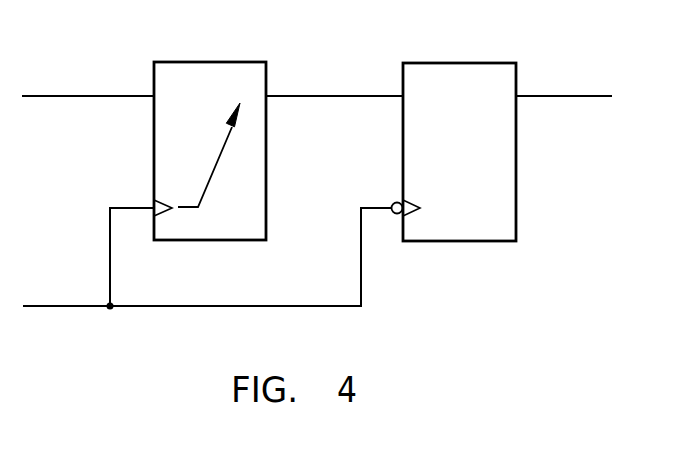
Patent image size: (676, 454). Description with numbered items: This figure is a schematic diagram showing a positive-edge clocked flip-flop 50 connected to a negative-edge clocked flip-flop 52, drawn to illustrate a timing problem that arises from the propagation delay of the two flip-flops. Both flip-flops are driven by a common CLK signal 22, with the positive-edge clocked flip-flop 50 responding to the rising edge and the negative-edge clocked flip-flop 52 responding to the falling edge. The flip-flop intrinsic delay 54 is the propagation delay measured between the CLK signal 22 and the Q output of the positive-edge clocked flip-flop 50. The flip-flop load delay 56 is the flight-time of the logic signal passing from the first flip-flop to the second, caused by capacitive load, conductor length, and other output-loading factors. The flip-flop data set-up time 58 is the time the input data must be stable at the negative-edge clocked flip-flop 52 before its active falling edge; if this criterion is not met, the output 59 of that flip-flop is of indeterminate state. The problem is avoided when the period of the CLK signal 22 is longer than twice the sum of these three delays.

The positive-edge clocked flip-flop 50 is at (163, 62).
The negative-edge clocked flip-flop 52 is at (412, 63).
The flip-flop intrinsic delay 54 is at (208, 177).
The flip-flop load delay 56 is at (325, 97).
The flip-flop data set-up time 58 is at (425, 117).
The output 59 is at (552, 97).
The CLK signal 22 is at (32, 307).